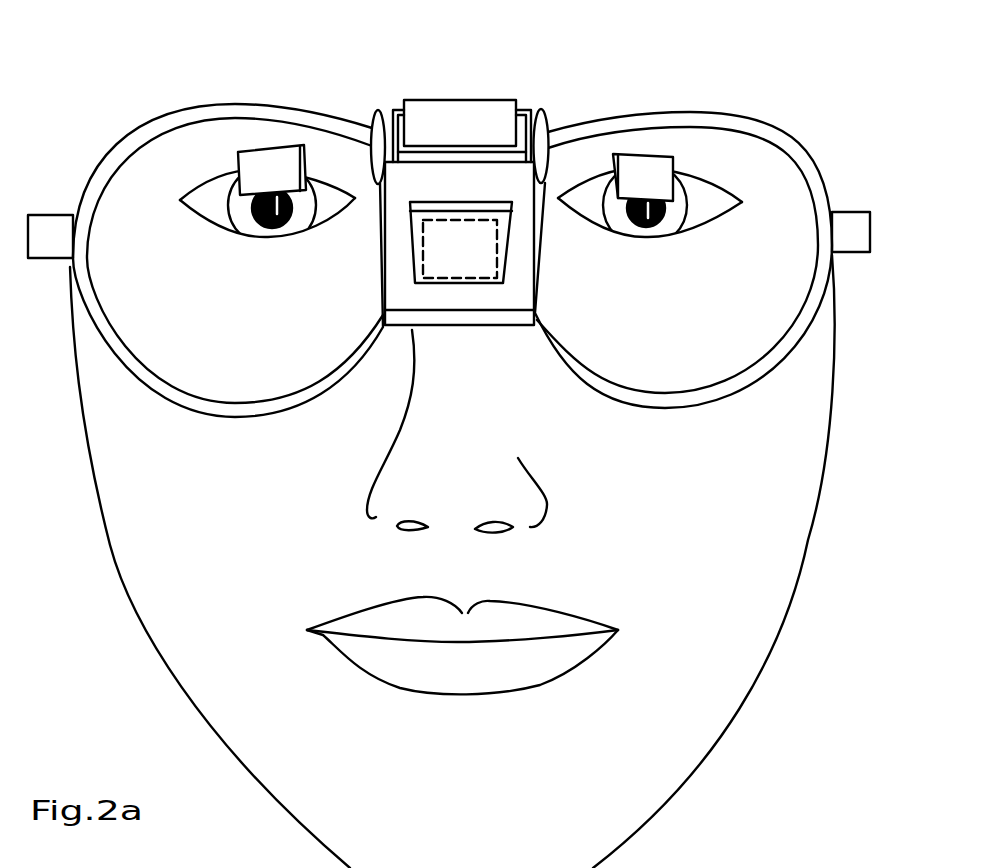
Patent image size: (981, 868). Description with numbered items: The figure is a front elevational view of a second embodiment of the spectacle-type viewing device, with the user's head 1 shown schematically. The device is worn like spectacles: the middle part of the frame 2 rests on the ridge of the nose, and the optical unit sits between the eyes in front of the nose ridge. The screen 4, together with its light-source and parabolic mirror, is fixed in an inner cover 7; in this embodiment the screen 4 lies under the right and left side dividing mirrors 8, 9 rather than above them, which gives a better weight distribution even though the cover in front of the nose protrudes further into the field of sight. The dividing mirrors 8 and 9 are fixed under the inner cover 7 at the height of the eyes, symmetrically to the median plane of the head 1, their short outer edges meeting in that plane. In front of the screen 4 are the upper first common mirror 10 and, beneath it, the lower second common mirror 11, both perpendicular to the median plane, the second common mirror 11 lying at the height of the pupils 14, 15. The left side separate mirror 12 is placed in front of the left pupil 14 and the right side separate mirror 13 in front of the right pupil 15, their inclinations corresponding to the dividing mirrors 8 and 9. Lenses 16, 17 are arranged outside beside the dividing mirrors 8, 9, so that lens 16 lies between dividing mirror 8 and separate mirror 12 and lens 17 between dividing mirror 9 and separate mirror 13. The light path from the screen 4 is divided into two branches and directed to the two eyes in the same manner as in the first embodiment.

The head 1 is at (110, 548).
The frame 2 is at (163, 115).
The screen 4 is at (497, 240).
The inner cover 7 is at (383, 287).
The left side dividing mirror 8 is at (378, 114).
The right side dividing mirror 9 is at (520, 110).
The upper first common mirror 10 is at (418, 243).
The lower second common mirror 11 is at (462, 110).
The left side separate mirror 12 is at (272, 163).
The right side separate mirror 13 is at (648, 172).
The left pupil 14 is at (227, 193).
The right pupil 15 is at (682, 193).
The lens 16 is at (372, 188).
The lens 17 is at (550, 110).